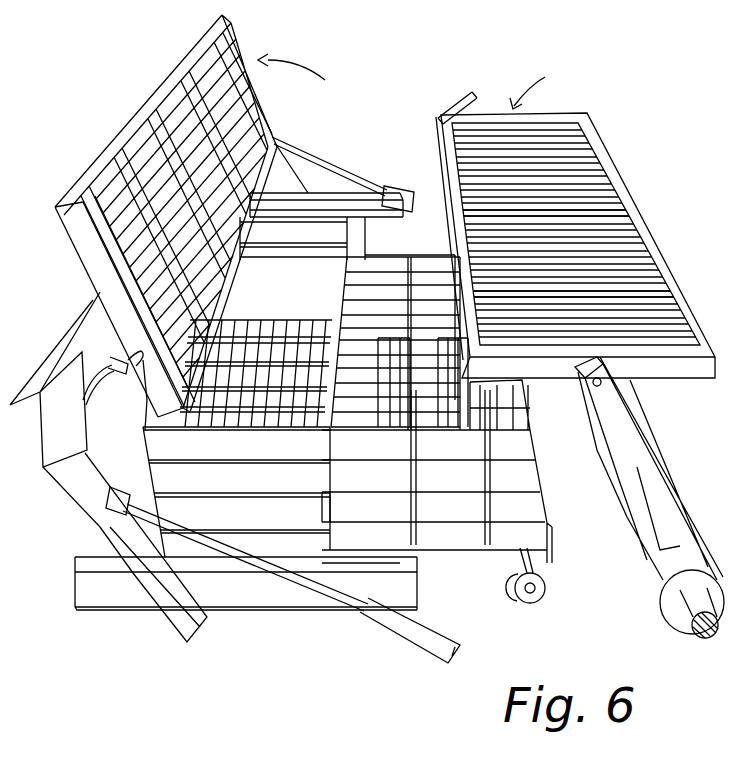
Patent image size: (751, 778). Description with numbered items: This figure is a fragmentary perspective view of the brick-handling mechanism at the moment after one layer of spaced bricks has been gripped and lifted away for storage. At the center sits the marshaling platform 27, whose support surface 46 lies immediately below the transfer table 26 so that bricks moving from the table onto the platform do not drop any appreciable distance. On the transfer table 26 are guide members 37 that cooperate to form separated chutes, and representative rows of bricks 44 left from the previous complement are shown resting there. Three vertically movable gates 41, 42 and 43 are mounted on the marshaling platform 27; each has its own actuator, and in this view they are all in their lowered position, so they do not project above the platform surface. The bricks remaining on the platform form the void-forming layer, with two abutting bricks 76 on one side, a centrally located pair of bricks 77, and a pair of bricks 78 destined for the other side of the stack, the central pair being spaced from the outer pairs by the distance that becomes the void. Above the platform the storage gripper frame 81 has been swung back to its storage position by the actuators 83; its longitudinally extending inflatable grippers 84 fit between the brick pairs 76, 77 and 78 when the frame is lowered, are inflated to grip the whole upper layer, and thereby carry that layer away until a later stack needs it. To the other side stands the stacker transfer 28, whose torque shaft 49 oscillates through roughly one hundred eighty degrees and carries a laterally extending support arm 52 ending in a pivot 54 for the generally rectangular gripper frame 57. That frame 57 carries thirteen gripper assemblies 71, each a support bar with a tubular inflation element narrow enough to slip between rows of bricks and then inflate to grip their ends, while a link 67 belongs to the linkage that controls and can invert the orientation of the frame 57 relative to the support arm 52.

The transfer table 26 is at (295, 550).
The marshaling platform 27 is at (452, 545).
The stacker transfer 28 is at (661, 497).
The guide members 37 is at (165, 480).
The gate 41 is at (548, 508).
The gate 42 is at (482, 502).
The gate 43 is at (405, 471).
The rows of bricks 44 is at (250, 400).
The support surface 46 is at (520, 445).
The torque shaft 49 is at (660, 570).
The support arm 52 is at (643, 482).
The pivot 54 is at (603, 384).
The gripper frame 57 is at (607, 176).
The link 67 is at (452, 100).
The gripper assembly 71 is at (672, 323).
The abutting bricks 76 is at (520, 395).
The centrally located bricks 77 is at (452, 420).
The pair of bricks 78 is at (385, 420).
The storage gripper frame 81 is at (100, 147).
The actuator 83 is at (400, 633).
The inflatable grippers 84 is at (253, 133).